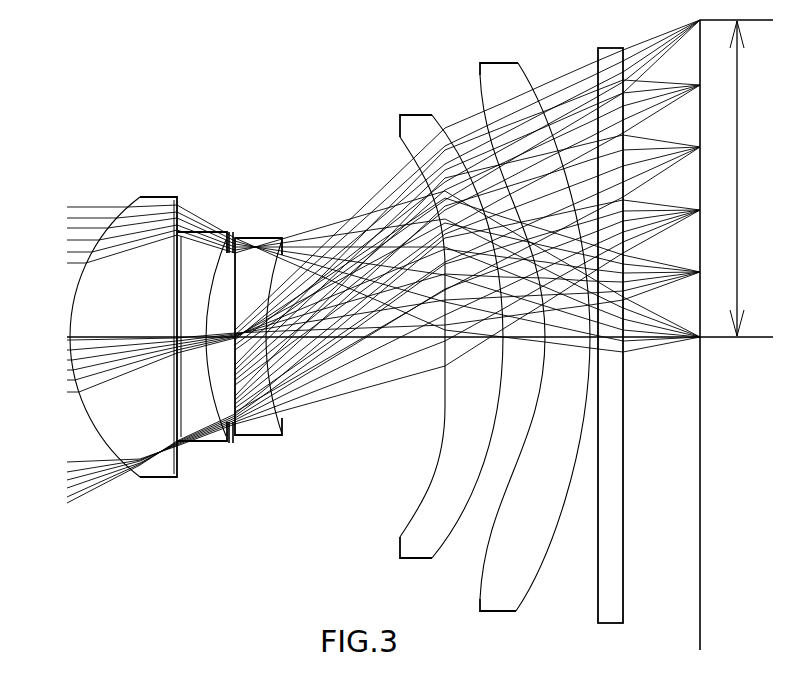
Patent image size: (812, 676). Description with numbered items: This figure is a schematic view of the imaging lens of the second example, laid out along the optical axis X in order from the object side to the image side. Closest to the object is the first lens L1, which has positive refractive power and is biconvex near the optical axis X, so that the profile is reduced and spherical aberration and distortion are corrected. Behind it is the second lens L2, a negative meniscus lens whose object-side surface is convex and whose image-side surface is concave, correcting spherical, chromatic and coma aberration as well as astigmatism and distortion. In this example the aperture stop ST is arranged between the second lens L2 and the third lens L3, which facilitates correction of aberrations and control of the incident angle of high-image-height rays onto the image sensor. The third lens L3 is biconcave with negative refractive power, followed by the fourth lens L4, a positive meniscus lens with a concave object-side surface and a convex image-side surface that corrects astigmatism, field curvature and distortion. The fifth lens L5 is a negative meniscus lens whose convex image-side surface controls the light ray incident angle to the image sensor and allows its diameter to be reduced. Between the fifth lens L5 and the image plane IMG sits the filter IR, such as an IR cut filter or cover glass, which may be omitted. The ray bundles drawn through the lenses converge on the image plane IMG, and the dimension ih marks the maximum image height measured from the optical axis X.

The optical axis X is at (70, 322).
The first lens L1 is at (155, 197).
The second lens L2 is at (222, 232).
The aperture stop ST is at (234, 443).
The third lens L3 is at (262, 238).
The fourth lens L4 is at (427, 113).
The fifth lens L5 is at (507, 62).
The filter IR is at (607, 47).
The image plane IMG is at (700, 622).
The maximum image height ih is at (726, 178).